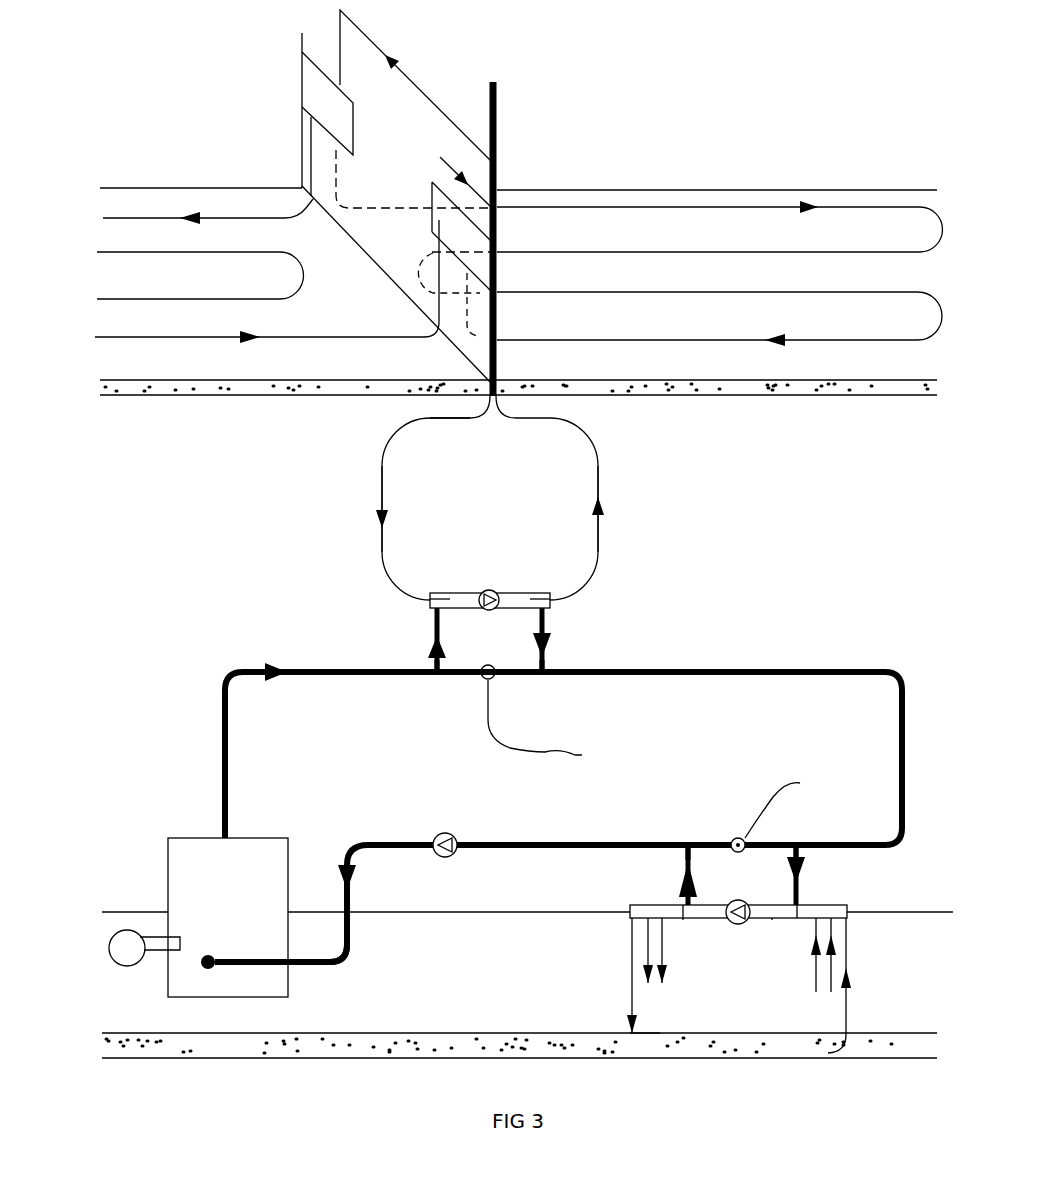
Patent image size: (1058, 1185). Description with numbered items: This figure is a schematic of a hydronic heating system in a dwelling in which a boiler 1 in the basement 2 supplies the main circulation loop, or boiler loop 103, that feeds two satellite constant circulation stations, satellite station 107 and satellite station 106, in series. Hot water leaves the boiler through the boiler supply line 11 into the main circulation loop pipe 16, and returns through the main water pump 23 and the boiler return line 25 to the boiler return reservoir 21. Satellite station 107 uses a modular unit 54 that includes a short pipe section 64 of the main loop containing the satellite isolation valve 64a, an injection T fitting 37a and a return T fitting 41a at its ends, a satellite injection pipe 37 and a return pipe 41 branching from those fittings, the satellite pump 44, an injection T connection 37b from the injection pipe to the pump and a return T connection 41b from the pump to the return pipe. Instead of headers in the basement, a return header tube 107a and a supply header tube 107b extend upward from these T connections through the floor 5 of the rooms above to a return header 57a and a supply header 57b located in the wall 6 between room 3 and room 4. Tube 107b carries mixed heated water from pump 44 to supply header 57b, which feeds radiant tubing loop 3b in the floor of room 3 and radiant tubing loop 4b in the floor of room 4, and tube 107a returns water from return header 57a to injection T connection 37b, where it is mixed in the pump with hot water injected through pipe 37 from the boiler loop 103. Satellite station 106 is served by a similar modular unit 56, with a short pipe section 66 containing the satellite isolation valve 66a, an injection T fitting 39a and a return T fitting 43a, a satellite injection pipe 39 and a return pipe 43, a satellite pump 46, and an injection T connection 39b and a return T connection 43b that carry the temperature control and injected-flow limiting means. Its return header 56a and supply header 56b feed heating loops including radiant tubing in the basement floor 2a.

The boiler 1 is at (197, 838).
The basement 2 is at (135, 465).
The basement floor slab 2a is at (631, 1040).
The room 3 is at (159, 75).
The radiant tubing loop 3b is at (152, 217).
The room 4 is at (673, 75).
The radiant tubing loop 4b is at (630, 207).
The floor 5 is at (705, 397).
The wall 6 is at (498, 147).
The boiler supply line 11 is at (230, 703).
The main circulation loop pipe 16 is at (906, 768).
The boiler return reservoir 21 is at (210, 953).
The main water pump 23 is at (437, 853).
The boiler return line 25 is at (347, 928).
The satellite injection pipe 37 is at (432, 625).
The injection T fitting 37a is at (437, 677).
The injection T connection 37b is at (426, 578).
The satellite injection pipe 39 is at (800, 893).
The injection T fitting 39a is at (796, 843).
The injection T connection 39b is at (772, 922).
The return pipe 41 is at (547, 613).
The return T fitting 41a is at (542, 678).
The return T connection 41b is at (537, 592).
The return pipe 43 is at (683, 857).
The return T fitting 43a is at (688, 843).
The return T connection 43b is at (682, 925).
The satellite pump 44 is at (485, 590).
The basement loop circulating pump 46 is at (735, 924).
The modular unit 54 is at (478, 528).
The modular unit 56 is at (728, 960).
The return header 56a is at (849, 920).
The supply header 56b is at (630, 923).
The return header 57a is at (432, 223).
The supply header 57b is at (318, 97).
The short pipe section 64 is at (462, 664).
The satellite isolation valve 64a is at (545, 752).
The short pipe section 66 is at (772, 852).
The satellite isolation valve 66a is at (800, 783).
The main circulation loop 103 is at (198, 673).
The satellite station 106 is at (525, 958).
The satellite station 107 is at (325, 511).
The return header tube 107a is at (442, 158).
The supply header tube 107b is at (341, 17).